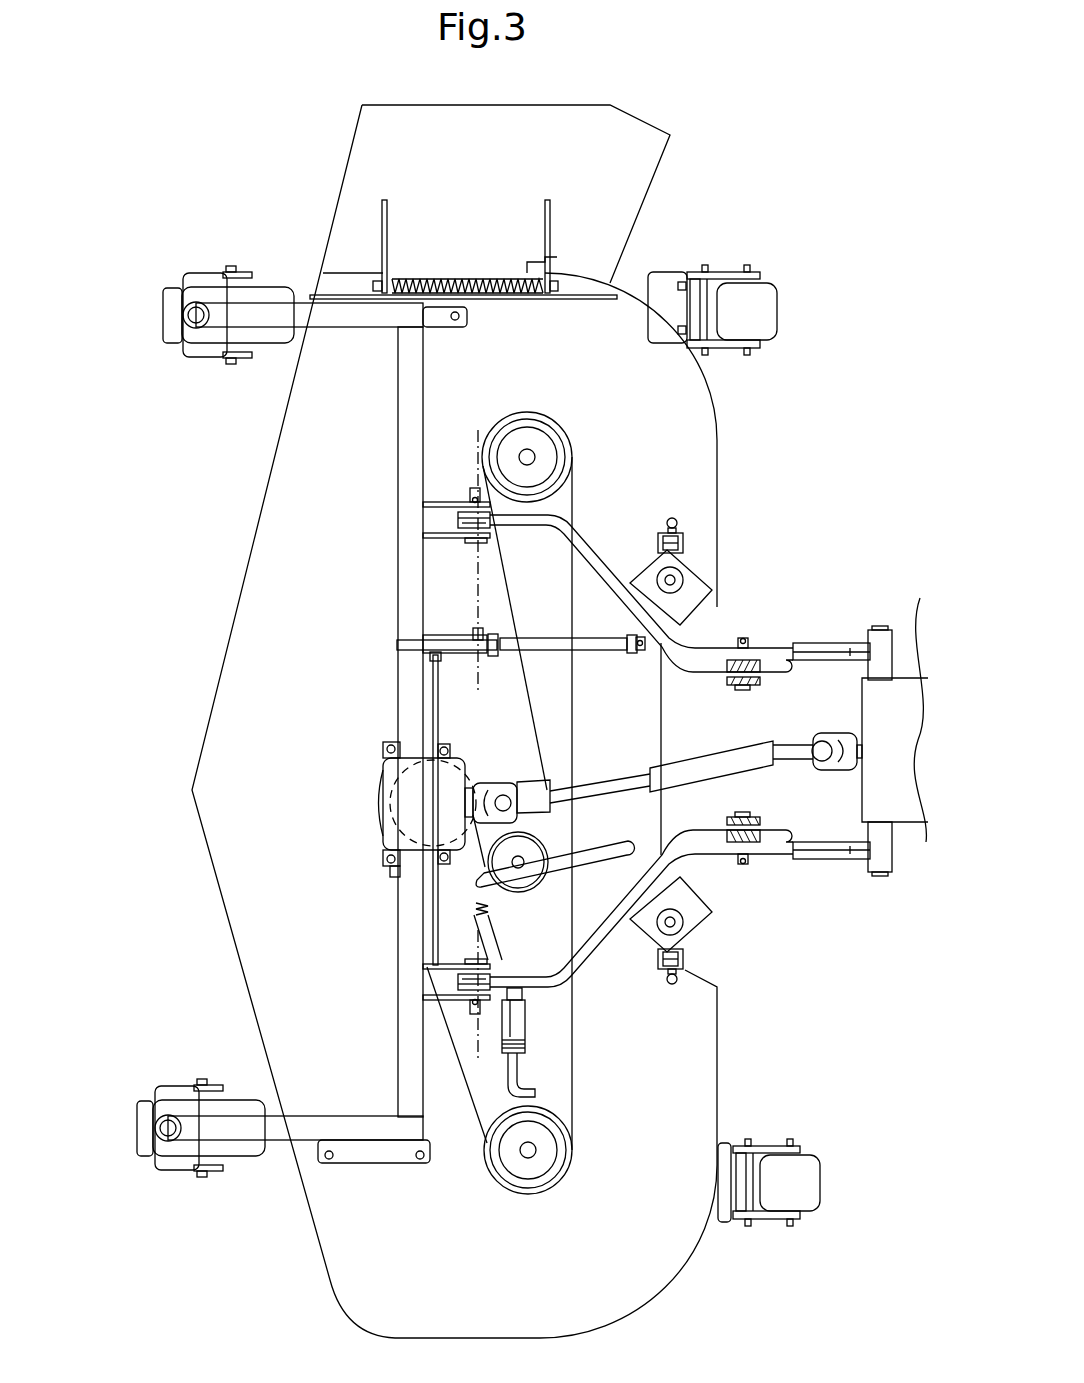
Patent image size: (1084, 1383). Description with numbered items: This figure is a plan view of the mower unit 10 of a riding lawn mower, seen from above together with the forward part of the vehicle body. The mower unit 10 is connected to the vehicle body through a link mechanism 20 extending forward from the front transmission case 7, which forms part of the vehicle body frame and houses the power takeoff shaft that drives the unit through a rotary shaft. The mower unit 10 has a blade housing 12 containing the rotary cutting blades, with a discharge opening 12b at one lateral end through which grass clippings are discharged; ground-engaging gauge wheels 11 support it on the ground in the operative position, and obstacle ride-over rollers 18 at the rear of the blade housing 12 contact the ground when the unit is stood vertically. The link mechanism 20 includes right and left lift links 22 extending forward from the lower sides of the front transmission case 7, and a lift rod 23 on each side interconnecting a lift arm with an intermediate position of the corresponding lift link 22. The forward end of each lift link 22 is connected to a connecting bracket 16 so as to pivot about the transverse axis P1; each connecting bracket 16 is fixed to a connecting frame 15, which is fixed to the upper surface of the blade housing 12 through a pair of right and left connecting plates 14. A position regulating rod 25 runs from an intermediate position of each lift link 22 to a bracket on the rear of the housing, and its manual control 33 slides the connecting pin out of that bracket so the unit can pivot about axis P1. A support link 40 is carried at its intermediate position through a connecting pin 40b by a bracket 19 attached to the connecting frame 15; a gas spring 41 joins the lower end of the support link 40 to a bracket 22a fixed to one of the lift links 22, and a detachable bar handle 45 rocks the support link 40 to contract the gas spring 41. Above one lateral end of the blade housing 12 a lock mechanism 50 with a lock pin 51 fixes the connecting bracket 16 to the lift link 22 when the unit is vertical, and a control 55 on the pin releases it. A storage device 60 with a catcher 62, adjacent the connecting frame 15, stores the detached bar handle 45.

The front transmission case 7 is at (905, 680).
The mower unit 10 is at (195, 498).
The ground-engaging gauge wheels 11 is at (175, 291).
The blade housing 12 is at (250, 935).
The discharge opening 12b is at (365, 158).
The connecting plates 14 is at (433, 327).
The connecting frame 15 is at (408, 522).
The connecting bracket 16 is at (447, 510).
The obstacle ride-over rollers 18 is at (767, 310).
The bracket 19 is at (437, 636).
The link mechanism 20 is at (641, 742).
The lift links 22 is at (575, 545).
The bracket 22a is at (650, 652).
The lift rod 23 is at (737, 688).
The position regulating rod 25 is at (683, 580).
The manual control 33 is at (672, 517).
The support link 40 is at (405, 640).
The connecting pin 40b is at (476, 632).
The gas spring 41 is at (600, 655).
The bar handle 45 is at (440, 705).
The lock mechanism 50 is at (561, 961).
The lock pin 51 is at (512, 1023).
The control 55 is at (554, 1047).
The storage device 60 is at (416, 785).
The catcher 62 is at (447, 790).
The axis P1 is at (475, 727).